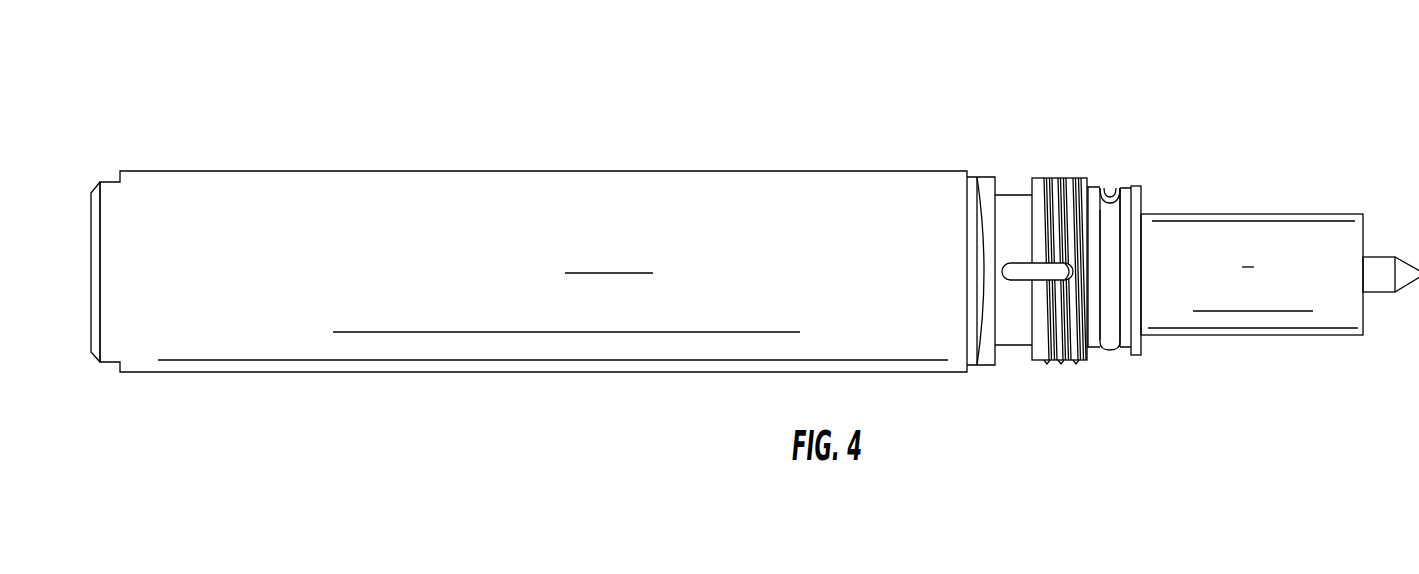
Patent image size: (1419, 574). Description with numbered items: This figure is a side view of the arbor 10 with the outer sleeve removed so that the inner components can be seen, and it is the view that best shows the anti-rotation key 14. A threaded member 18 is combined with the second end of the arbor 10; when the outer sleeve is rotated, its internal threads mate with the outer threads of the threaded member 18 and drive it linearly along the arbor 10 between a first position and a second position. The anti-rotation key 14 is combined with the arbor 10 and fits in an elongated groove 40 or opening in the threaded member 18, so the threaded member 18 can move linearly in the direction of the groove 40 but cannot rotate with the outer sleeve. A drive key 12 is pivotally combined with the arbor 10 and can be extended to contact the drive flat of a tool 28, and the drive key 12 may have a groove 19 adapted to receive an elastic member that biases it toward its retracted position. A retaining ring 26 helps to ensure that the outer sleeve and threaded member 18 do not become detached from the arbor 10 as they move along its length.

The arbor 10 is at (498, 266).
The drive key 12 is at (1110, 190).
The anti-rotation key 14 is at (1022, 270).
The threaded member 18 is at (1057, 178).
The groove 19 is at (1114, 190).
The retaining ring 26 is at (1133, 356).
The tool 28 is at (1309, 283).
The elongated groove 40 is at (1098, 272).